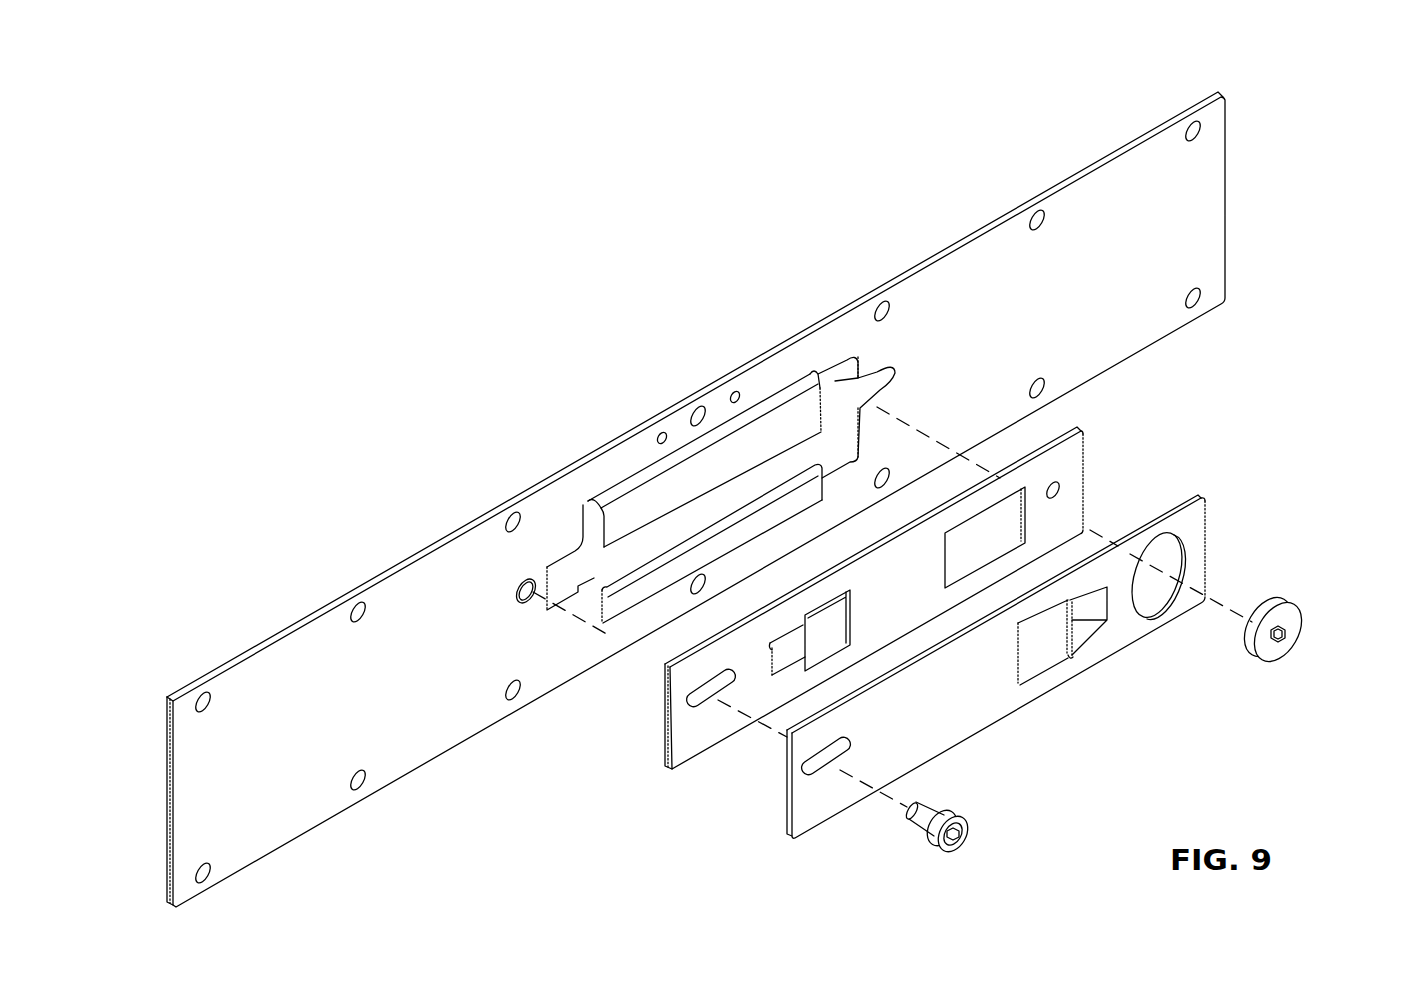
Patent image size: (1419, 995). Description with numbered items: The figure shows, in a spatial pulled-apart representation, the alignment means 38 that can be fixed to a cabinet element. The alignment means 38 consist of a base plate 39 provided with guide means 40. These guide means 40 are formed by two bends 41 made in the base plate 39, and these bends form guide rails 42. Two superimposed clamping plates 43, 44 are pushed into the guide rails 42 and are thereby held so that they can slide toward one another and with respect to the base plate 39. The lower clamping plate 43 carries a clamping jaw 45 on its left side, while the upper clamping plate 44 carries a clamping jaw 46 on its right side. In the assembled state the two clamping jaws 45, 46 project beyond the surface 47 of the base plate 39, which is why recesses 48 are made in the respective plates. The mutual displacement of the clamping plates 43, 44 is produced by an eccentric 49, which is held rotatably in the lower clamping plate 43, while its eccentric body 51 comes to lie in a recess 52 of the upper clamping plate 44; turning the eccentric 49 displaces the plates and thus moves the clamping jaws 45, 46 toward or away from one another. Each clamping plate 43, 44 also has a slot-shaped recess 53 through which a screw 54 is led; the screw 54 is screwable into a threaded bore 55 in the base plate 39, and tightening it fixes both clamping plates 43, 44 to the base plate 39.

The alignment means 38 is at (385, 462).
The base plate 39 is at (968, 282).
The guide means 40 is at (593, 533).
The bends 41 is at (653, 487).
The guide rails 42 is at (763, 393).
The clamping plate 43 is at (1083, 447).
The clamping plate 44 is at (1195, 513).
The clamping jaw 45 is at (798, 645).
The clamping jaw 46 is at (1055, 627).
The surface 47 is at (1073, 175).
The recesses 48 is at (850, 360).
The eccentric 49 is at (1305, 622).
The eccentric body 51 is at (1278, 660).
The recess 52 is at (1178, 560).
The slot-shaped recess 53 is at (700, 700).
The screw 54 is at (935, 838).
The bore 55 is at (520, 600).